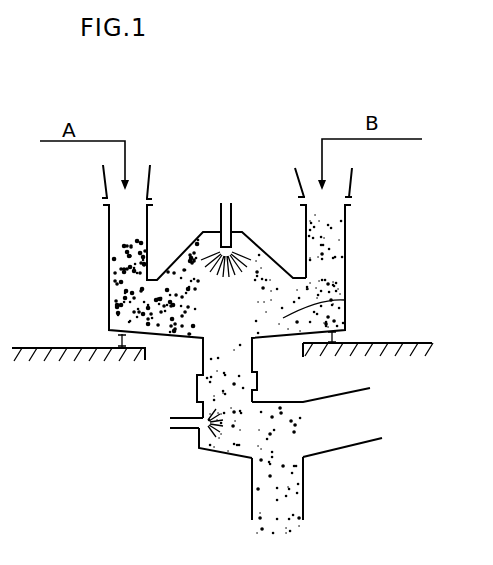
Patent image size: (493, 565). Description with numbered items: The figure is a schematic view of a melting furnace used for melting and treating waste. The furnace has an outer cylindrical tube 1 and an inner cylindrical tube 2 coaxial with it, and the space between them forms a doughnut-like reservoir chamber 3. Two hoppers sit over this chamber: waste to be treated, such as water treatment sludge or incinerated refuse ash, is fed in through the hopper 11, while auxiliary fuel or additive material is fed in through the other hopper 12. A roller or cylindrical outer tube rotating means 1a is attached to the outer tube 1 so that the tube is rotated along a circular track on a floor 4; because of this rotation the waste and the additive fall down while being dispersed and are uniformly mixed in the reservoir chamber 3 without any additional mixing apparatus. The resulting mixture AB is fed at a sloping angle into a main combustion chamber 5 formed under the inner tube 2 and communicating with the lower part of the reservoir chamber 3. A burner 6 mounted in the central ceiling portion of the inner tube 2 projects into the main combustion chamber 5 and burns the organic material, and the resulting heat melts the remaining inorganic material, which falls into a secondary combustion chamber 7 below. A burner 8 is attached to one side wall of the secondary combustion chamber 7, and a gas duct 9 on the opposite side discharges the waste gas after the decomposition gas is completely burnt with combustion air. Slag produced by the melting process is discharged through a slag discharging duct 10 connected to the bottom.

The outer cylindrical tube 1 is at (108, 281).
The outer tube rotating means 1a is at (338, 341).
The inner cylindrical tube 2 is at (147, 262).
The reservoir chamber 3 is at (120, 221).
The floor 4 is at (45, 347).
The main combustion chamber 5 is at (267, 278).
The burner 6 is at (232, 215).
The secondary combustion chamber 7 is at (268, 412).
The burner 8 is at (189, 430).
The gas duct 9 is at (355, 437).
The slag discharging duct 10 is at (300, 495).
The hopper 11 is at (152, 176).
The hopper 12 is at (351, 181).
The mixture AB is at (345, 300).